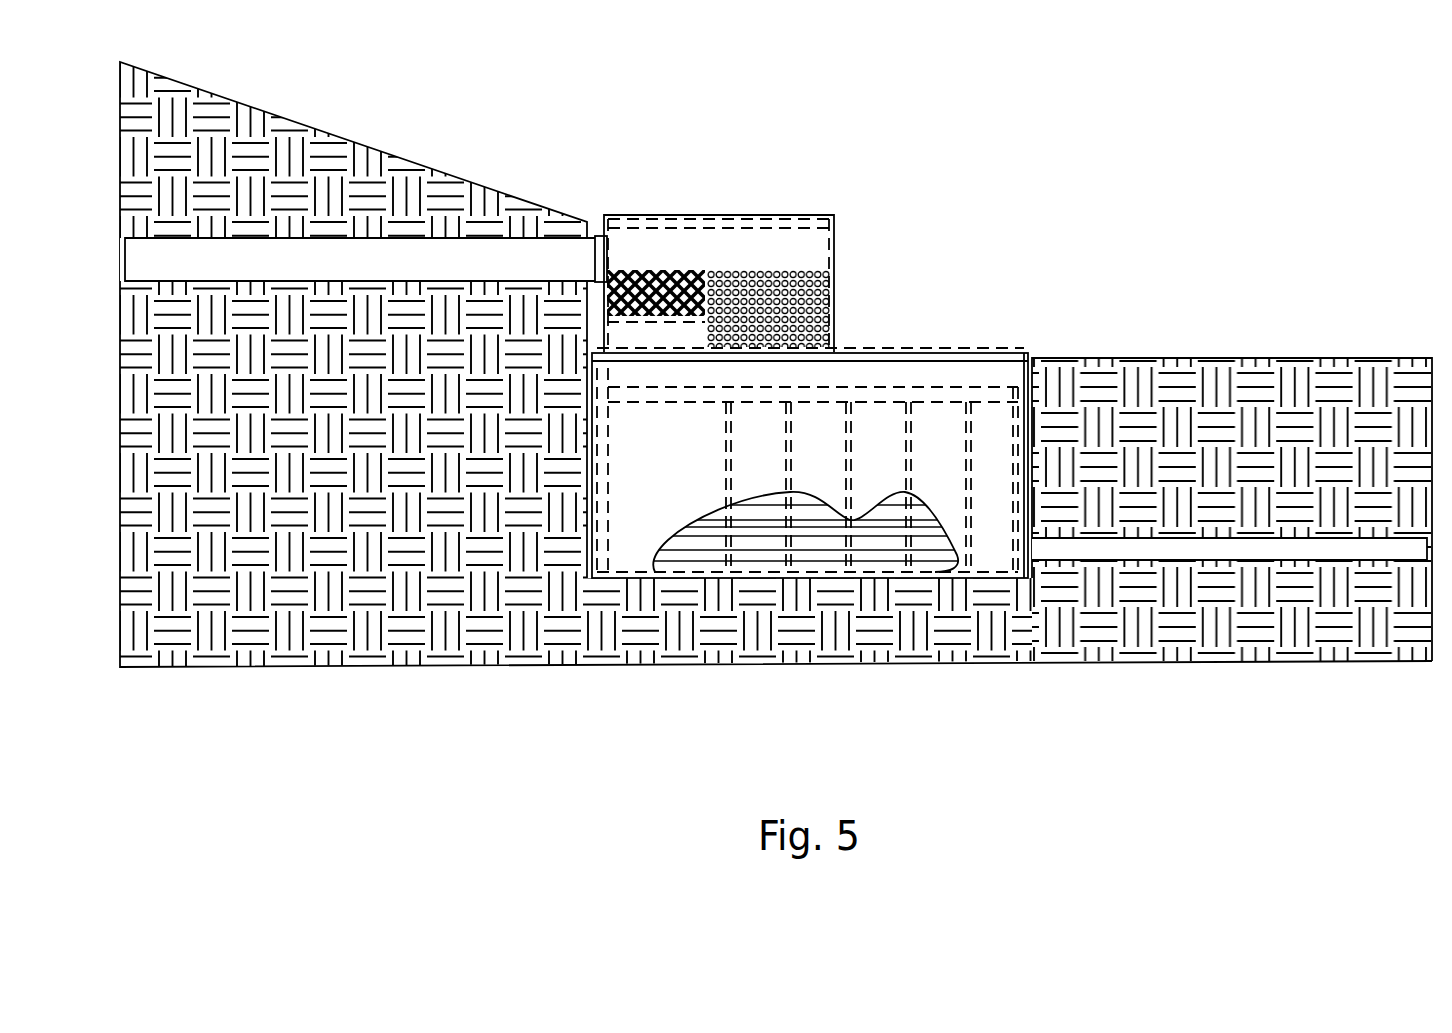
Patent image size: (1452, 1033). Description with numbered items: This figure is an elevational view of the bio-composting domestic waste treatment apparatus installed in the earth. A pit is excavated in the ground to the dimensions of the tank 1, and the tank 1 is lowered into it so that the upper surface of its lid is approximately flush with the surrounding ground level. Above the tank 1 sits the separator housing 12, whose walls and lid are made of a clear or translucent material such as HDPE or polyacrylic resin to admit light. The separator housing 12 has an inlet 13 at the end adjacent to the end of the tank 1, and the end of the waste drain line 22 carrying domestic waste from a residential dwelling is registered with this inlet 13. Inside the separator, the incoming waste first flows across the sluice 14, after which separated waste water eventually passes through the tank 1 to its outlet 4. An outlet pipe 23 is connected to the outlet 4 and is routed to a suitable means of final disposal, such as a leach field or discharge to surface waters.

The tank 1 is at (892, 385).
The outlet 4 is at (1038, 550).
The separator housing 12 is at (719, 208).
The inlet 13 is at (597, 253).
The sluice 14 is at (672, 280).
The waste drain line 22 is at (445, 258).
The outlet pipe 23 is at (1300, 547).